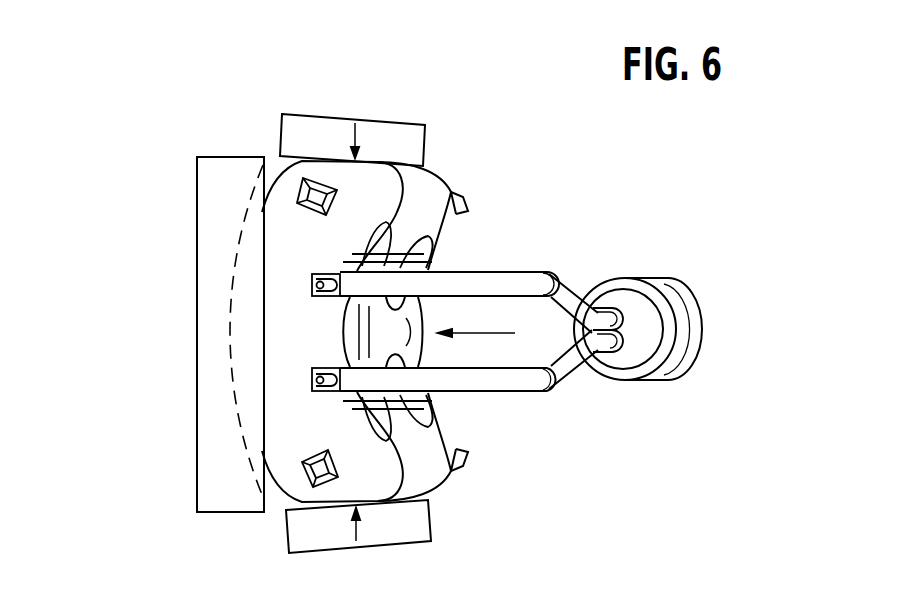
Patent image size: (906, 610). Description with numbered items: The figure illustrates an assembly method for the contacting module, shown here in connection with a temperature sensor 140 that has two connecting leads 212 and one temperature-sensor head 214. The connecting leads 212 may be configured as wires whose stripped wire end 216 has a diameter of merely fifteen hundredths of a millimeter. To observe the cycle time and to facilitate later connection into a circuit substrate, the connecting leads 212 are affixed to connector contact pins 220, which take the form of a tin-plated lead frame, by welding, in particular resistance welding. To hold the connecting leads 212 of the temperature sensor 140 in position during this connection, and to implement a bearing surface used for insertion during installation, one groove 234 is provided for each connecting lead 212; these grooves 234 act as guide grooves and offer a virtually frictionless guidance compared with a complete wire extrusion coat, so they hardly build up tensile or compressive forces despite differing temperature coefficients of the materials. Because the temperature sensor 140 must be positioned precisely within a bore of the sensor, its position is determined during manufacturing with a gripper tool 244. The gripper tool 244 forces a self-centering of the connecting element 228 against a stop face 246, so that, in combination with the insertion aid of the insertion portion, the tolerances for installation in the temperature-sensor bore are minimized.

The temperature sensor 140 is at (553, 256).
The connecting leads 212 is at (530, 380).
The temperature-sensor head 214 is at (673, 343).
The wire end 216 is at (312, 284).
The connector contact pins 220 is at (297, 191).
The connecting element 228 is at (430, 187).
The groove 234 is at (433, 270).
The gripper tool 244 is at (327, 133).
The stop face 246 is at (215, 412).